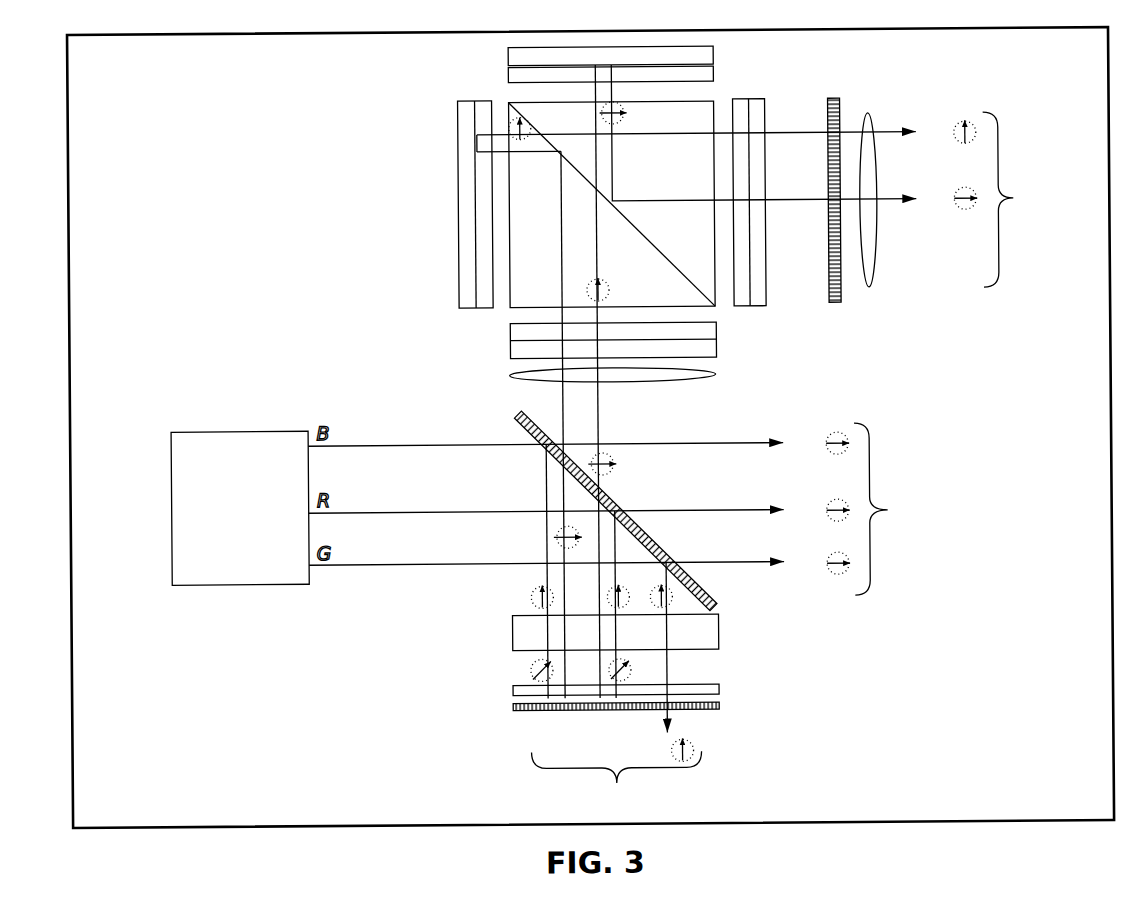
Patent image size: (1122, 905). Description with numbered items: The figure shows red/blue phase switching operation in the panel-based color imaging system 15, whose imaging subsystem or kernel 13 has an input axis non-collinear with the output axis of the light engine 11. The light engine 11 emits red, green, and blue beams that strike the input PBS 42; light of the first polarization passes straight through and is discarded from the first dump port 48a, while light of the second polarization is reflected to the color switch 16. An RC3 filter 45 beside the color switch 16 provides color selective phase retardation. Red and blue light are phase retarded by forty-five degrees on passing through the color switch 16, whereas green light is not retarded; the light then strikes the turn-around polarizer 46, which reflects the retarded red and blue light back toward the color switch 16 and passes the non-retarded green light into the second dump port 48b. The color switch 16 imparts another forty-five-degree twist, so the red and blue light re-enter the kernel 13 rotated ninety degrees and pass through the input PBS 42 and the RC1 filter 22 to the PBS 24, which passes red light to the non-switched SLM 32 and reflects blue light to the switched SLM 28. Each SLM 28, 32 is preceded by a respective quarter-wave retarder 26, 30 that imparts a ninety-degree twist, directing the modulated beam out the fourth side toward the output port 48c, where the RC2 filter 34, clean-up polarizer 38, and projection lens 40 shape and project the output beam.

The light engine 11 is at (236, 582).
The imaging subsystem or kernel 13 is at (335, 187).
The panel-based color imaging system 15 is at (170, 827).
The color switch 16 is at (718, 628).
The RC1 filter 22 is at (511, 340).
The polarization beam splitter 24 is at (678, 129).
The quarter-wave retarder 26 is at (488, 100).
The first spatial light modulator 28 is at (716, 375).
The quarter-wave retarder 30 is at (716, 73).
The second spatial light modulator 32 is at (716, 55).
The RC2 filter 34 is at (751, 307).
The clean-up polarizer 38 is at (834, 304).
The projection lens 40 is at (870, 115).
The input PBS 42 is at (519, 412).
The RC3 filter 45 is at (718, 688).
The turn-around polarizer 46 is at (718, 706).
The first dump port 48a is at (871, 442).
The second dump port 48b is at (700, 762).
The output port 48c is at (1002, 255).